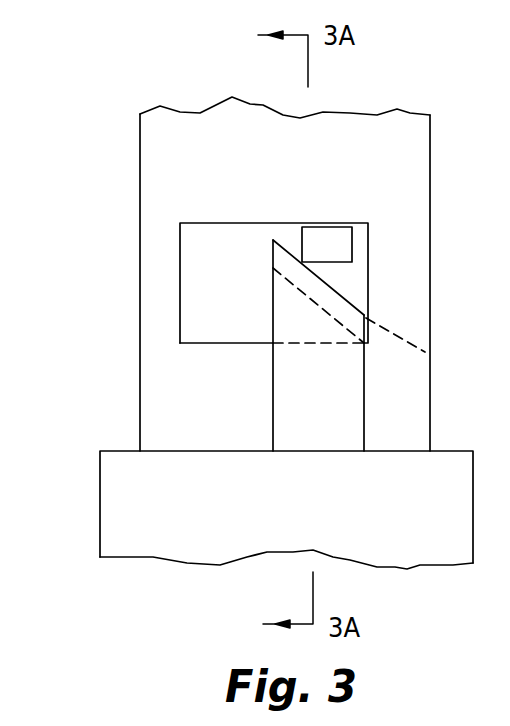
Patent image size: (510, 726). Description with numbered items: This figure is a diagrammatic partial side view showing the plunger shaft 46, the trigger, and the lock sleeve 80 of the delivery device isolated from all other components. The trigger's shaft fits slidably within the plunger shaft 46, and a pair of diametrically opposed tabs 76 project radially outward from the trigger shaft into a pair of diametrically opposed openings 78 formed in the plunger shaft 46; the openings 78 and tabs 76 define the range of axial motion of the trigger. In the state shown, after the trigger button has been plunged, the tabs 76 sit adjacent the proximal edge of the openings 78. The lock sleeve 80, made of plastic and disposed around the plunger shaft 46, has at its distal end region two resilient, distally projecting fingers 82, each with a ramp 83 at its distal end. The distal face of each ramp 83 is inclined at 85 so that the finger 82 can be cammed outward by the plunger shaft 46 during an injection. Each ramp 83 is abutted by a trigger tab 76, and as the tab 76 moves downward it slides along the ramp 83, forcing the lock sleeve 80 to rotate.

The plunger shaft 46 is at (370, 165).
The tabs 76 is at (342, 242).
The openings 78 is at (228, 223).
The lock sleeve 80 is at (94, 546).
The fingers 82 is at (292, 395).
The ramp 83 is at (342, 295).
The incline 85 is at (432, 355).